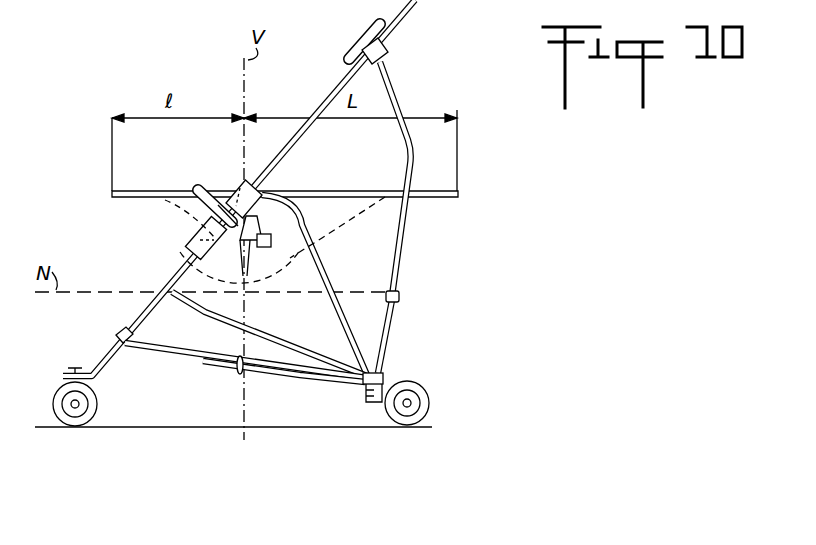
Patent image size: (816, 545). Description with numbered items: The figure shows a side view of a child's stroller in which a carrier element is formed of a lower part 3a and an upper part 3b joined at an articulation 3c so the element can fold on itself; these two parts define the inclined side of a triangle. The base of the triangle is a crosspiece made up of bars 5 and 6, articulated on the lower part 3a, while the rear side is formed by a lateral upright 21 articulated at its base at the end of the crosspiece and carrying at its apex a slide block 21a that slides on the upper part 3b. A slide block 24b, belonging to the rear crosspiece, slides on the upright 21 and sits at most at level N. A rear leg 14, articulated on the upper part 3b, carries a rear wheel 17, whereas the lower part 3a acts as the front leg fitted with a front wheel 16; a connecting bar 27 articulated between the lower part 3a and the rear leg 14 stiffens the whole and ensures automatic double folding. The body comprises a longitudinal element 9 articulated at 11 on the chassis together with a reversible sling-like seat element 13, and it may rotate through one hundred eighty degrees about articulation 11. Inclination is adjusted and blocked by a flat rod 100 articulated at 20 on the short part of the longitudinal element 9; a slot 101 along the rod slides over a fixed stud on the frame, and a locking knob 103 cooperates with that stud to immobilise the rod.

The longitudinal element 9 is at (112, 192).
The lower part of the carrier element 3a is at (135, 320).
The upper part of the carrier element 3b is at (332, 88).
The articulation 3c is at (193, 246).
The slide block 21a is at (388, 50).
The lateral upright 21 is at (404, 235).
The slide block 24b is at (398, 298).
The rear leg 14 is at (345, 326).
The connecting bar 27 is at (190, 312).
The bar of the base crosspiece 5 is at (171, 348).
The bar of the base crosspiece 6 is at (297, 376).
The rear wheel 17 is at (417, 397).
The front wheel 16 is at (65, 404).
The articulation 11 is at (239, 188).
The flat rod 100 is at (203, 200).
The slot 101 is at (186, 220).
The articulation 20 is at (214, 186).
The locking knob 103 is at (240, 277).
The sling-like seat element 13 is at (325, 239).